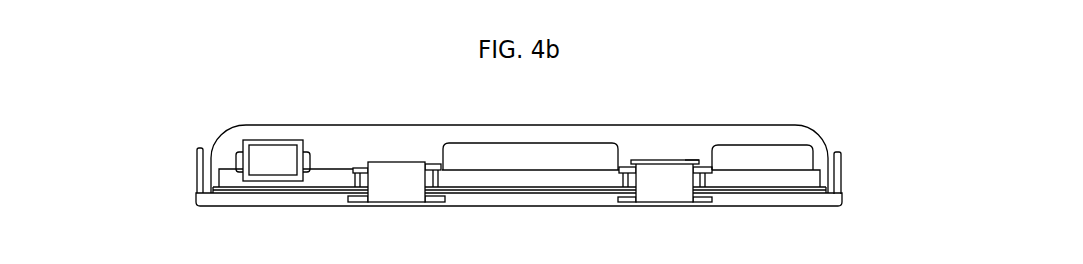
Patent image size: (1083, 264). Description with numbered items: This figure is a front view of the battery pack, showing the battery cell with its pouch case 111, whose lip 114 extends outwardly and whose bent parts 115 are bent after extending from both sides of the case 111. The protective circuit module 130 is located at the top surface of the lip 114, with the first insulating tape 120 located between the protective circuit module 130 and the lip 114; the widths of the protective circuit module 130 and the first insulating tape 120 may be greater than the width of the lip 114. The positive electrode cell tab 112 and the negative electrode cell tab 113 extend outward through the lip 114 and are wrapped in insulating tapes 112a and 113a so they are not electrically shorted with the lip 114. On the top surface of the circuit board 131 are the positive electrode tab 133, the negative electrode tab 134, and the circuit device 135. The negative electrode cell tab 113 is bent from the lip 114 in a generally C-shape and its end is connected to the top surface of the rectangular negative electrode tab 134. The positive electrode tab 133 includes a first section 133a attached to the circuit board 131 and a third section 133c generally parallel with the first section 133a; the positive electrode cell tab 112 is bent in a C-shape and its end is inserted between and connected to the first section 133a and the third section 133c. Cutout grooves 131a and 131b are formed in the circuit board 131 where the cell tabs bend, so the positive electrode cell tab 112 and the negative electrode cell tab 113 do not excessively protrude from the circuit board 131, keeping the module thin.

The pouch case 111 is at (497, 134).
The positive electrode cell tab 112 is at (646, 168).
The insulating tape 112a is at (703, 202).
The negative electrode cell tab 113 is at (385, 170).
The insulating tape 113a is at (355, 202).
The lip 114 is at (520, 201).
The bent parts 115 is at (196, 161).
The first insulating tape 120 is at (576, 191).
The protective circuit module 130 is at (465, 180).
The circuit board 131 is at (760, 182).
The cutout groove 131a is at (628, 166).
The cutout groove 131b is at (359, 168).
The positive electrode tab 133 is at (663, 160).
The first section 133a is at (714, 167).
The third section 133c is at (689, 160).
The negative electrode tab 134 is at (432, 164).
The circuit device 135 is at (552, 150).